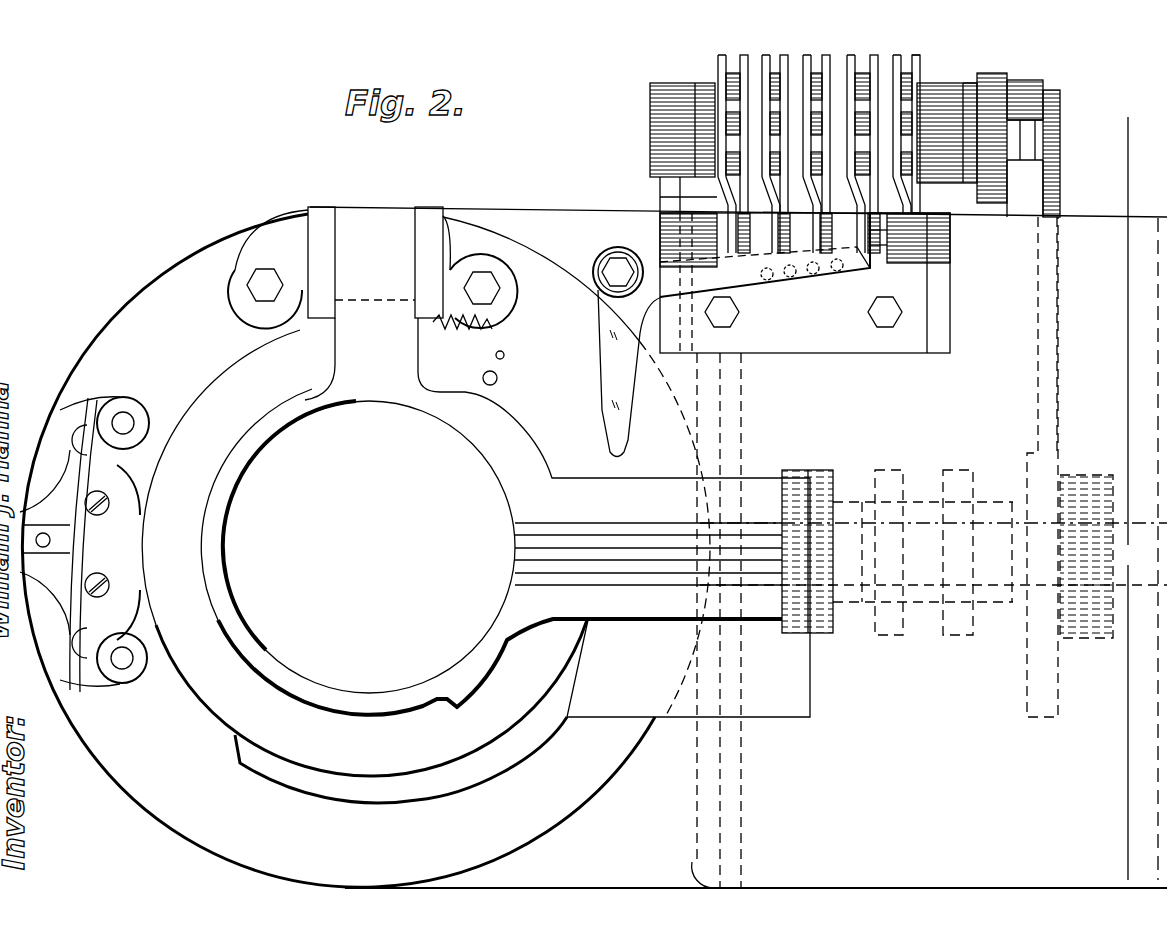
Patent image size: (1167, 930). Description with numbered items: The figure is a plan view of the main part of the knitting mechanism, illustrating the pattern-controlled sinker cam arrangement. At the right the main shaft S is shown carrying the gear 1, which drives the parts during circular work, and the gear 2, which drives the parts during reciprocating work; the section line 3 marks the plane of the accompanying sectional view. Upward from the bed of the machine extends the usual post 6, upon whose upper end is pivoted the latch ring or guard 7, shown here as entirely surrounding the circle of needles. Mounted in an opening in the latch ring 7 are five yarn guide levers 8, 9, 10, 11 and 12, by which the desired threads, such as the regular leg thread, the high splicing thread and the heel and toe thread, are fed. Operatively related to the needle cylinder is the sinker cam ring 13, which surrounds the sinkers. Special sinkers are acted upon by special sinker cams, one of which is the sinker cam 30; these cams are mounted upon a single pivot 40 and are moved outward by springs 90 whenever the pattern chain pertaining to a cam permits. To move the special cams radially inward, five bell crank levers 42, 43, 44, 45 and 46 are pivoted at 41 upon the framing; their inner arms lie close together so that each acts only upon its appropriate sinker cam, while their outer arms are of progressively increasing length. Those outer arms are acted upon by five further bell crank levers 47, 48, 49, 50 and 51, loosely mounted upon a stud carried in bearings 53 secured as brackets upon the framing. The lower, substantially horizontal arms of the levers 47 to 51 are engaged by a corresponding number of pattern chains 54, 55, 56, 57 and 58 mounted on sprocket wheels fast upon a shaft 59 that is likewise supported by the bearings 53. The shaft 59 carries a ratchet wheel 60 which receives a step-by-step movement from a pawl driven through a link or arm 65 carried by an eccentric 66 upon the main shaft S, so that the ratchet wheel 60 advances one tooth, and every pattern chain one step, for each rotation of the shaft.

The gear 1 is at (1092, 622).
The gear 2 is at (812, 628).
The section line 3 is at (1121, 491).
The post 6 is at (318, 210).
The latch ring 7 is at (478, 670).
The yarn guide lever 8 is at (626, 530).
The yarn guide lever 9 is at (652, 542).
The yarn guide lever 10 is at (622, 556).
The yarn guide lever 11 is at (650, 568).
The yarn guide lever 12 is at (678, 580).
The sinker cam ring 13 is at (232, 382).
The sinker cam 30 is at (600, 472).
The pivot 40 is at (492, 377).
The pivot 41 is at (612, 262).
The bell crank lever 42 is at (767, 282).
The bell crank lever 43 is at (791, 280).
The bell crank lever 44 is at (816, 277).
The bell crank lever 45 is at (842, 272).
The bell crank lever 46 is at (872, 266).
The bell crank lever 47 is at (660, 186).
The bell crank lever 48 is at (660, 206).
The bell crank lever 49 is at (880, 220).
The bell crank lever 50 is at (880, 232).
The bell crank lever 51 is at (880, 246).
The bearing 53 is at (952, 288).
The pattern chain 54 is at (718, 62).
The pattern chain 55 is at (762, 82).
The pattern chain 56 is at (915, 62).
The pattern chain 57 is at (969, 70).
The pattern chain 58 is at (880, 88).
The shaft 59 is at (930, 178).
The ratchet wheel 60 is at (1045, 165).
The link 65 is at (1045, 290).
The eccentric 66 is at (1030, 680).
The spring 90 is at (494, 342).
The main shaft S is at (933, 548).